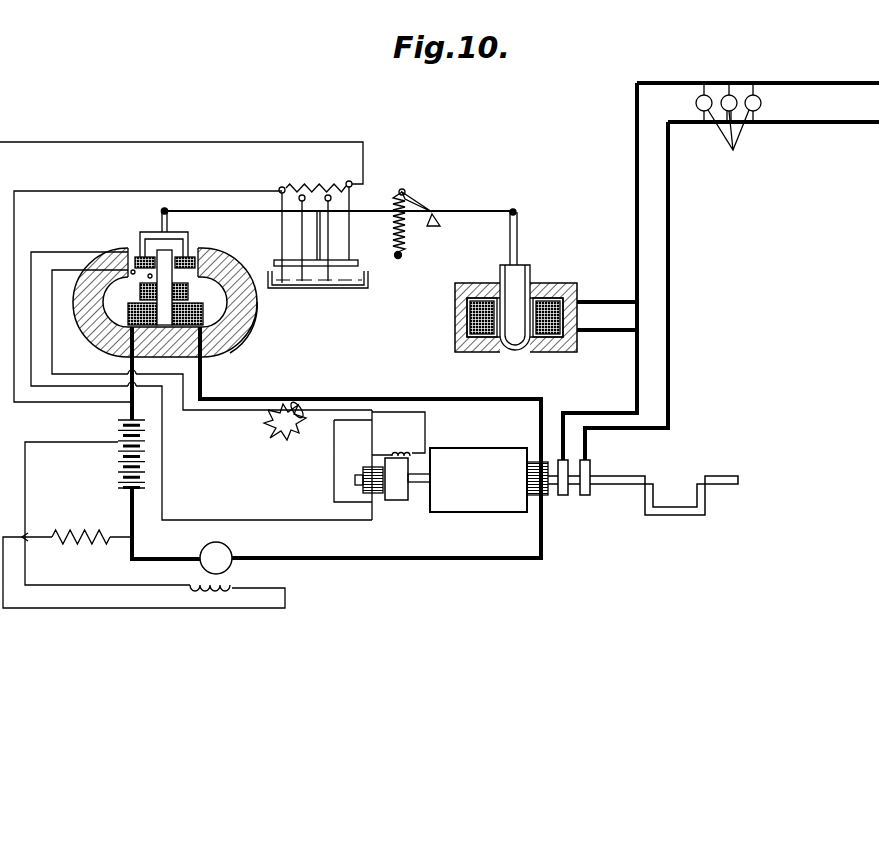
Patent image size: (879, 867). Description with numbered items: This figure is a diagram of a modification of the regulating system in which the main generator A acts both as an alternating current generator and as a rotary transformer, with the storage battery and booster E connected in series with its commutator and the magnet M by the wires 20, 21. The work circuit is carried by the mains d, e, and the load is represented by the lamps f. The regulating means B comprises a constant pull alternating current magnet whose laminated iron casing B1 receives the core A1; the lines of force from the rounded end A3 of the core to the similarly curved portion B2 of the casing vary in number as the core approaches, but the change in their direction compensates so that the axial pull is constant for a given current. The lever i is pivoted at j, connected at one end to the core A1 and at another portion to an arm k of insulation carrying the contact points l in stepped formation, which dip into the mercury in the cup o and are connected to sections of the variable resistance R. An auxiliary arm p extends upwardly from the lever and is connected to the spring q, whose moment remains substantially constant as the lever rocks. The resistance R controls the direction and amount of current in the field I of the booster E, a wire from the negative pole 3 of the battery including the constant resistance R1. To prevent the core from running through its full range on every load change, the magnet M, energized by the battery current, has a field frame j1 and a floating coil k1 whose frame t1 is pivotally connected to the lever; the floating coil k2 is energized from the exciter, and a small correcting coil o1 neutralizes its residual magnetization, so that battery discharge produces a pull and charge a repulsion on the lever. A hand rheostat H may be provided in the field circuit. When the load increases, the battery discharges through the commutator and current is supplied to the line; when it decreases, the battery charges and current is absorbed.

The regulating means B is at (175, 301).
The field frame j1 is at (234, 345).
The magnet M is at (127, 317).
The floating coil k2 is at (197, 257).
The correcting coil o1 is at (142, 290).
The frame of the floating coil t1 is at (145, 231).
The wire 20 is at (135, 367).
The lever i is at (470, 211).
The variable resistance R is at (315, 221).
The arm of insulation k is at (355, 283).
The cup o is at (316, 283).
The contact points l is at (328, 273).
The spring q is at (392, 226).
The auxiliary arm p is at (407, 218).
The pivot j is at (432, 226).
The laminated iron casing B1 is at (574, 348).
The floating coil k1 is at (467, 328).
The curved portion of the casing B2 is at (548, 350).
The core A1 is at (515, 282).
The plunger A3 is at (513, 337).
The main d is at (690, 122).
The main e is at (735, 83).
The lamps f is at (728, 142).
The hand rheostat H is at (290, 432).
The main generator A is at (118, 418).
The negative pole 3 is at (118, 488).
The wire 21 is at (138, 498).
The constant resistance R1 is at (81, 521).
The booster E is at (203, 570).
The field of the booster I is at (233, 590).